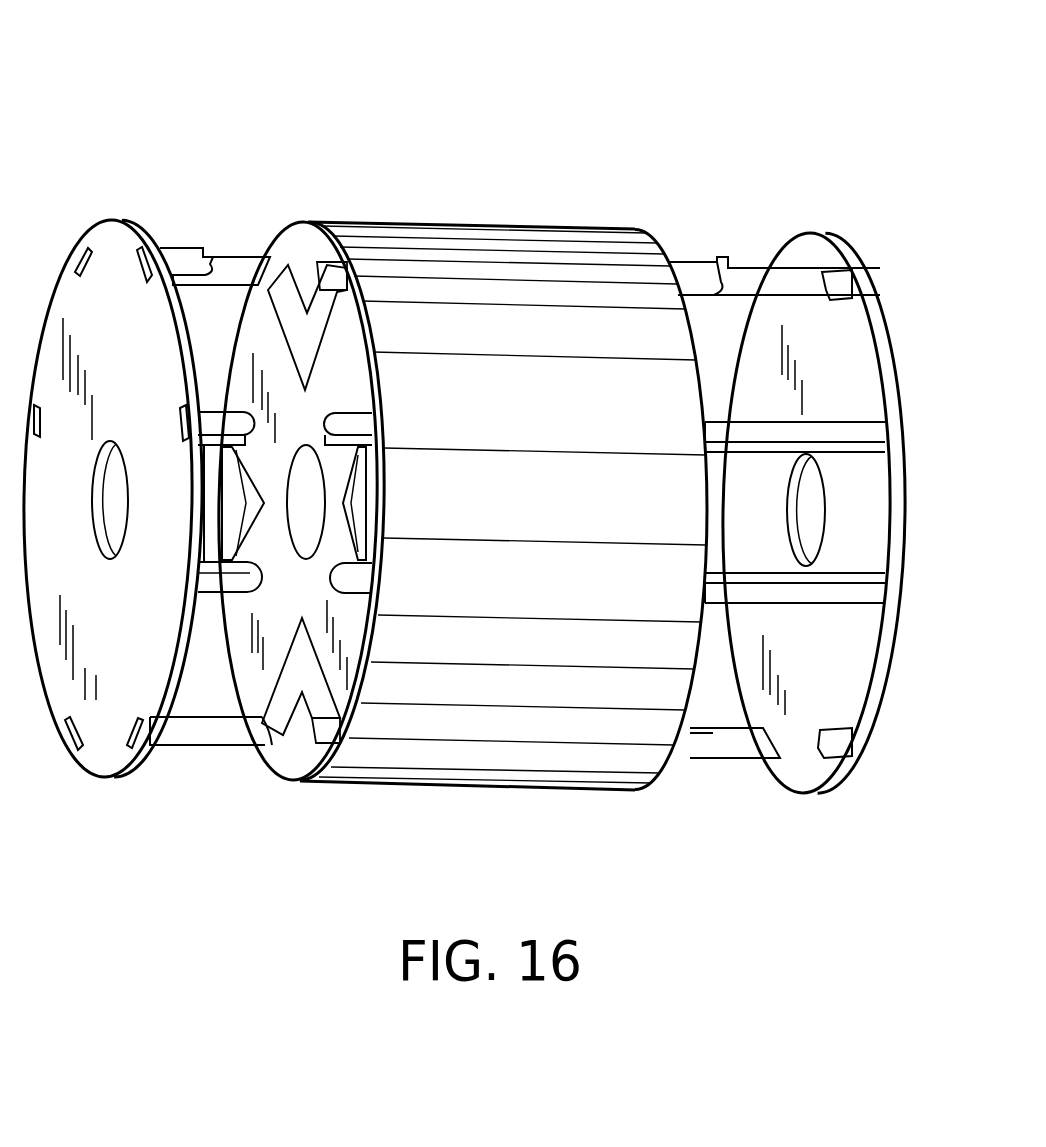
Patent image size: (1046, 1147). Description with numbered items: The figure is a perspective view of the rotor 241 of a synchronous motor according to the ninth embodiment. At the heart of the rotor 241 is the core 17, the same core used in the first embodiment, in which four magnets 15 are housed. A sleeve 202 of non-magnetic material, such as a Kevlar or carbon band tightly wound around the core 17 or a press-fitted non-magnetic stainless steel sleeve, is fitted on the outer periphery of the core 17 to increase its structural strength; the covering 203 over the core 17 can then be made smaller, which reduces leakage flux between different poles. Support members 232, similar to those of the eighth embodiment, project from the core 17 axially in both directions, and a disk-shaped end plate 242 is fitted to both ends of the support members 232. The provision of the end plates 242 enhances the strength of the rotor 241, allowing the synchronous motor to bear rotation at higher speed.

The rotor 241 is at (602, 126).
The end plate 242 is at (103, 768).
The support member 232 is at (235, 268).
The covering 203 is at (316, 492).
The sleeve 202 is at (627, 257).
The core 17 is at (352, 355).
The magnet 15 is at (290, 740).